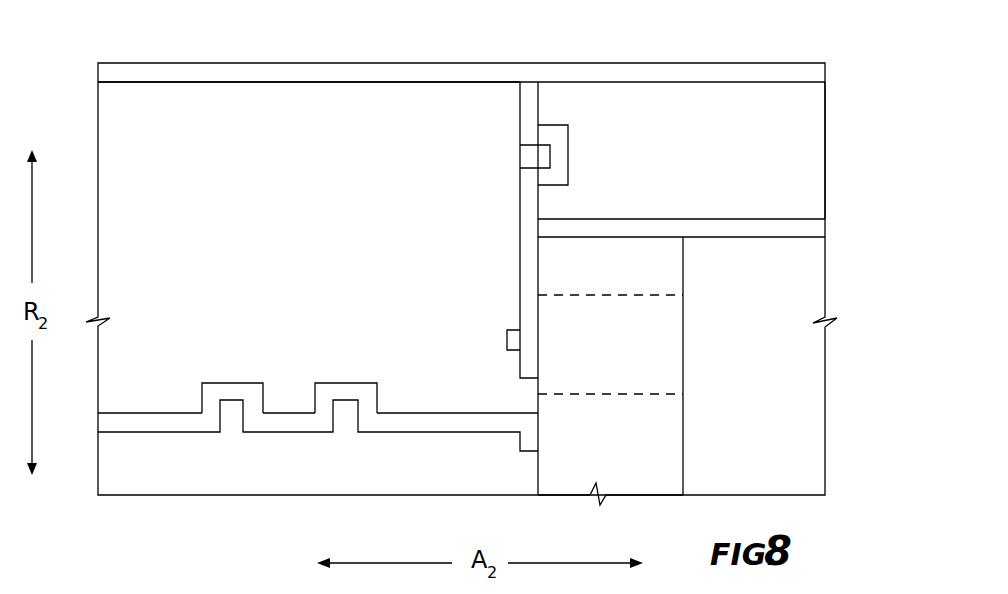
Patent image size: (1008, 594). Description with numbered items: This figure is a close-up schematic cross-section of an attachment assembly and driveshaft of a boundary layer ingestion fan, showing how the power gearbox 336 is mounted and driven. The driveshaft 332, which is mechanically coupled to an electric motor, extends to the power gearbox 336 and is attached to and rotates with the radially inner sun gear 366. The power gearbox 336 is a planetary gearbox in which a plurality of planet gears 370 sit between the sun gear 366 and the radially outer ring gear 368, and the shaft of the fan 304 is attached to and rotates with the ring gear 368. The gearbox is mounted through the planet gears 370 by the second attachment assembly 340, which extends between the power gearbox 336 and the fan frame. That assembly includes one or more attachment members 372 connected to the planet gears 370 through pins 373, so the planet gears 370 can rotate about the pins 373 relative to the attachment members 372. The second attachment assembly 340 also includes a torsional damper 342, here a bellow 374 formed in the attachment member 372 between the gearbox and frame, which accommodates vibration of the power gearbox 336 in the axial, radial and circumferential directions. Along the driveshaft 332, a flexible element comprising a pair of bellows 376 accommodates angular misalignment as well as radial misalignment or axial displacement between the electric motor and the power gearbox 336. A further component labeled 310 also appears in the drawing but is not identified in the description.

The housing 310 is at (708, 70).
The second attachment assembly 340 is at (484, 122).
The attachment member 372 is at (527, 207).
The bellow 374 is at (563, 148).
The pin 373 is at (507, 337).
The torsional damper 342 is at (617, 169).
The fan 304 is at (780, 228).
The power gearbox 336 is at (735, 395).
The ring gear 368 is at (668, 268).
The planet gear 370 is at (668, 360).
The sun gear 366 is at (668, 447).
The driveshaft 332 is at (162, 420).
The bellow 376 is at (240, 383).